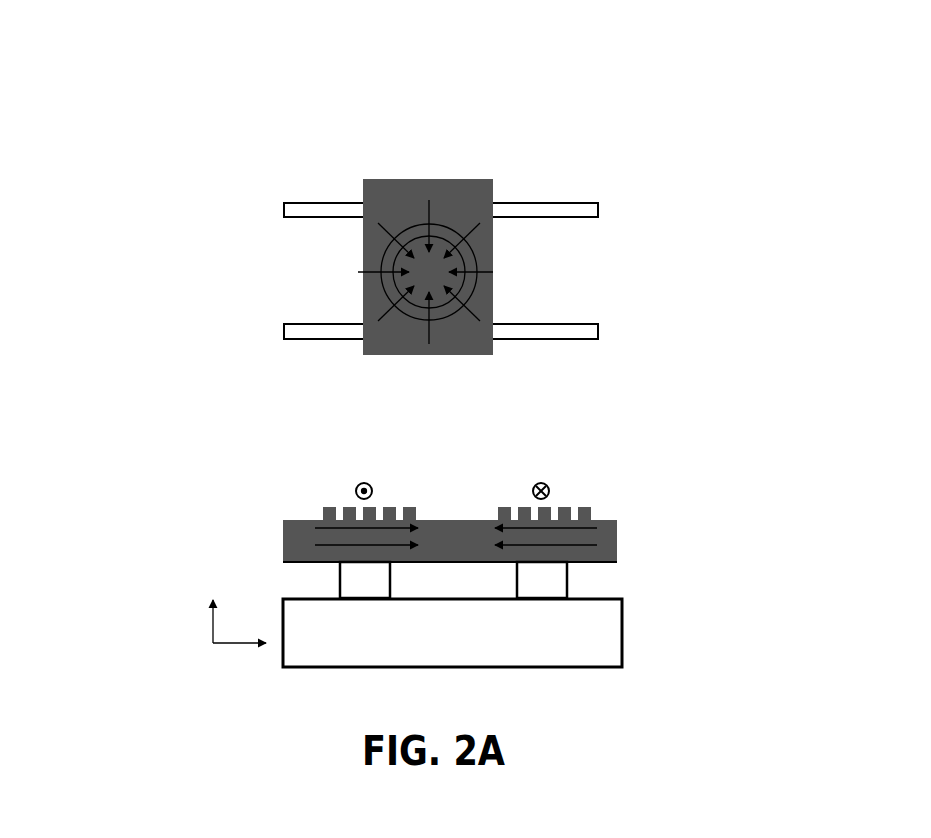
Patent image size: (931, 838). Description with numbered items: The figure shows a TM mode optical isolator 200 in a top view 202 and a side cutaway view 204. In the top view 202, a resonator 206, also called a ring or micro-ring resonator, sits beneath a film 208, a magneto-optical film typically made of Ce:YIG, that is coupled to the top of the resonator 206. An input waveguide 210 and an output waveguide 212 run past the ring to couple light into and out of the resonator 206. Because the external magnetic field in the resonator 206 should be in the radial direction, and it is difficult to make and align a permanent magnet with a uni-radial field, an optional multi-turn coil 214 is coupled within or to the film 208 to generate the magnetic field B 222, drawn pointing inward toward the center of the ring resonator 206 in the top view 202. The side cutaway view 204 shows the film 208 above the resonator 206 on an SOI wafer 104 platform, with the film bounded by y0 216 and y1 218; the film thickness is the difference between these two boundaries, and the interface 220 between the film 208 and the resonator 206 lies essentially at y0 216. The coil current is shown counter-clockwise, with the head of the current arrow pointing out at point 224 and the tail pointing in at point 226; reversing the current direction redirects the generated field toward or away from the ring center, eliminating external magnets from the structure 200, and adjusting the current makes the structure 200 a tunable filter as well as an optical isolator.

The TM mode optical isolator 200 is at (410, 100).
The top view 202 is at (643, 248).
The side cutaway view 204 is at (655, 655).
The resonator 206 is at (682, 591).
The film 208 is at (496, 251).
The input waveguide 210 is at (398, 214).
The output waveguide 212 is at (394, 343).
The multi-turn coil 214 is at (403, 486).
The boundary y0 216 is at (250, 558).
The boundary y1 218 is at (250, 520).
The interface 220 is at (617, 562).
The magnetic field B 222 is at (332, 272).
The point where current arrow head points out 224 is at (355, 490).
The point where current arrow tail points in 226 is at (552, 488).
The SOI wafer 104 is at (608, 660).